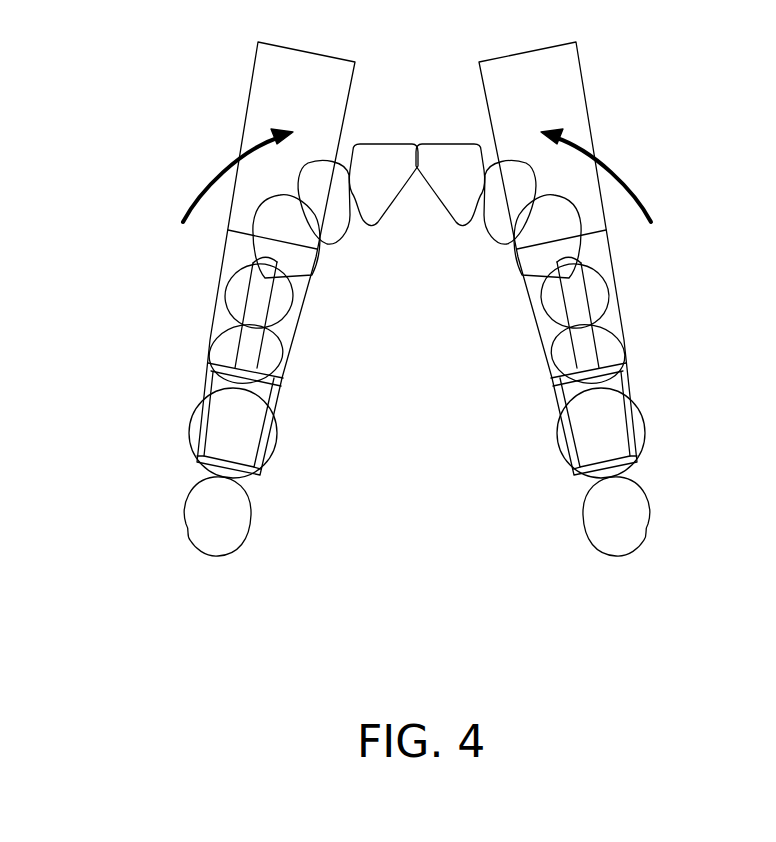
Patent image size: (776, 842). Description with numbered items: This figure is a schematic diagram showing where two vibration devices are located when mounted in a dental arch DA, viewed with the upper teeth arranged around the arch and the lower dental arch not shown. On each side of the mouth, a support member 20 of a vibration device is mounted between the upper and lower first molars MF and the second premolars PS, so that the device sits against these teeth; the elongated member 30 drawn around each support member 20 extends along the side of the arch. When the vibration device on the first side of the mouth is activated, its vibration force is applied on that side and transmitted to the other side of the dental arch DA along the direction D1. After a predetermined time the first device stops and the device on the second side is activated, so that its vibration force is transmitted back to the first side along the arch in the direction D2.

The holder 30 is at (258, 62).
The support member 20 is at (197, 412).
The second premolars PS is at (567, 362).
The first molars MF is at (597, 440).
The dental arch DA is at (644, 565).
The direction D1 is at (614, 175).
The direction D2 is at (221, 175).